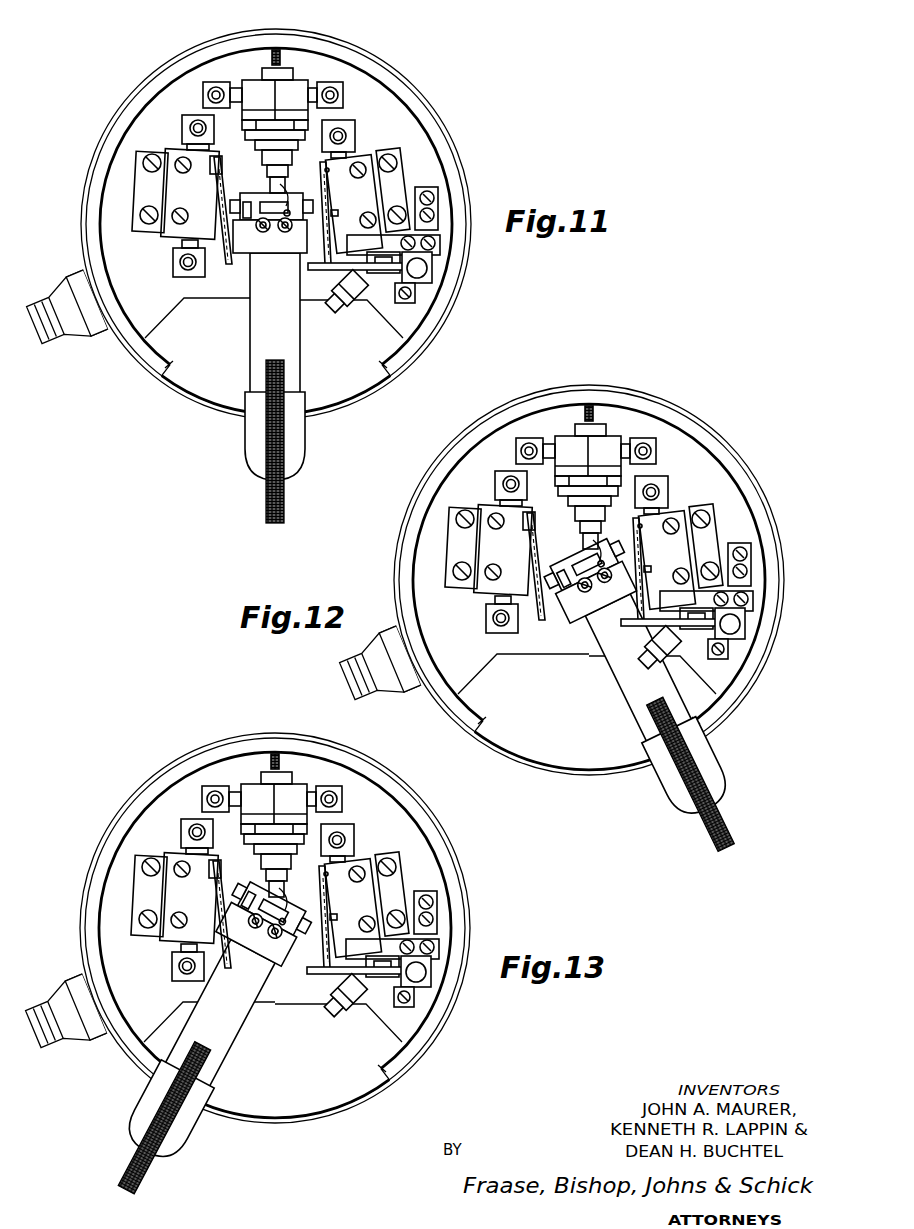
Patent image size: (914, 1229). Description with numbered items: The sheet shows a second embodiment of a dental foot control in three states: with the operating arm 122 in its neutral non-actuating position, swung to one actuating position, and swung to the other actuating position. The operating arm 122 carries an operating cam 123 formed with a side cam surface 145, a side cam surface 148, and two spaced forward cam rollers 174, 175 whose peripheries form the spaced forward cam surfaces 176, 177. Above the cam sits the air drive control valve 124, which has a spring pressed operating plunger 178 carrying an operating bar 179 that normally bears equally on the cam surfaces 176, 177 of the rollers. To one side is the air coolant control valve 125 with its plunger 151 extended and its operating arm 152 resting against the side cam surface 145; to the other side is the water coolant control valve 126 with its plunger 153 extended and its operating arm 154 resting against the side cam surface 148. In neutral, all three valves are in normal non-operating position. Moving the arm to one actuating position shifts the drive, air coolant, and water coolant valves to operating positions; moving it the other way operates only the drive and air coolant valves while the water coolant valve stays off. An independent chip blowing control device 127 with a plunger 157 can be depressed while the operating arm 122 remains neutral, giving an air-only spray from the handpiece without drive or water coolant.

In FIG. 11, the operating arm 122 is at (247, 365).
In FIG. 12, the operating arm 122 is at (633, 723).
In FIG. 13, the operating arm 122 is at (224, 1073).
In FIG. 11, the operating cam 123 is at (243, 257).
In FIG. 12, the operating cam 123 is at (572, 620).
In FIG. 13, the operating cam 123 is at (283, 968).
In FIG. 11, the air drive control valve 124 is at (240, 82).
In FIG. 12, the air drive control valve 124 is at (611, 433).
In FIG. 13, the air drive control valve 124 is at (247, 783).
In FIG. 11, the air coolant control valve 125 is at (373, 150).
In FIG. 12, the air coolant control valve 125 is at (680, 503).
In FIG. 13, the air coolant control valve 125 is at (368, 852).
In FIG. 11, the water coolant control valve 126 is at (167, 148).
In FIG. 12, the water coolant control valve 126 is at (487, 498).
In FIG. 13, the water coolant control valve 126 is at (167, 852).
In FIG. 11, the chip blowing control device 127 is at (423, 290).
In FIG. 12, the chip blowing control device 127 is at (735, 644).
In FIG. 13, the chip blowing control device 127 is at (425, 985).
In FIG. 11, the side cam surface 145 is at (332, 205).
In FIG. 12, the side cam surface 145 is at (640, 538).
In FIG. 13, the side cam surface 145 is at (298, 975).
In FIG. 11, the side cam surface 148 is at (227, 200).
In FIG. 12, the side cam surface 148 is at (552, 612).
In FIG. 13, the side cam surface 148 is at (215, 890).
In FIG. 11, the plunger 151 is at (335, 213).
In FIG. 12, the plunger 151 is at (647, 565).
In FIG. 13, the plunger 151 is at (330, 910).
In FIG. 11, the operating arm 152 is at (332, 275).
In FIG. 12, the operating arm 152 is at (643, 597).
In FIG. 13, the operating arm 152 is at (322, 949).
In FIG. 11, the plunger 153 is at (170, 200).
In FIG. 12, the plunger 153 is at (523, 557).
In FIG. 13, the plunger 153 is at (210, 907).
In FIG. 11, the operating arm 154 is at (227, 262).
In FIG. 12, the operating arm 154 is at (530, 612).
In FIG. 13, the operating arm 154 is at (207, 967).
In FIG. 11, the plunger 157 is at (428, 268).
In FIG. 12, the plunger 157 is at (742, 626).
In FIG. 13, the plunger 157 is at (428, 975).
In FIG. 11, the cam roller 174 is at (285, 233).
In FIG. 12, the cam roller 174 is at (590, 588).
In FIG. 13, the cam roller 174 is at (277, 940).
In FIG. 11, the cam roller 175 is at (265, 233).
In FIG. 12, the cam roller 175 is at (578, 605).
In FIG. 13, the cam roller 175 is at (257, 930).
In FIG. 11, the forward cam surface 176 is at (287, 213).
In FIG. 12, the forward cam surface 176 is at (598, 537).
In FIG. 13, the forward cam surface 176 is at (280, 912).
In FIG. 11, the forward cam surface 177 is at (262, 219).
In FIG. 12, the forward cam surface 177 is at (572, 577).
In FIG. 13, the forward cam surface 177 is at (257, 890).
In FIG. 11, the operating plunger 178 is at (275, 195).
In FIG. 12, the operating plunger 178 is at (580, 557).
In FIG. 13, the operating plunger 178 is at (268, 900).
In FIG. 11, the operating bar 179 is at (283, 200).
In FIG. 12, the operating bar 179 is at (580, 550).
In FIG. 13, the operating bar 179 is at (275, 915).